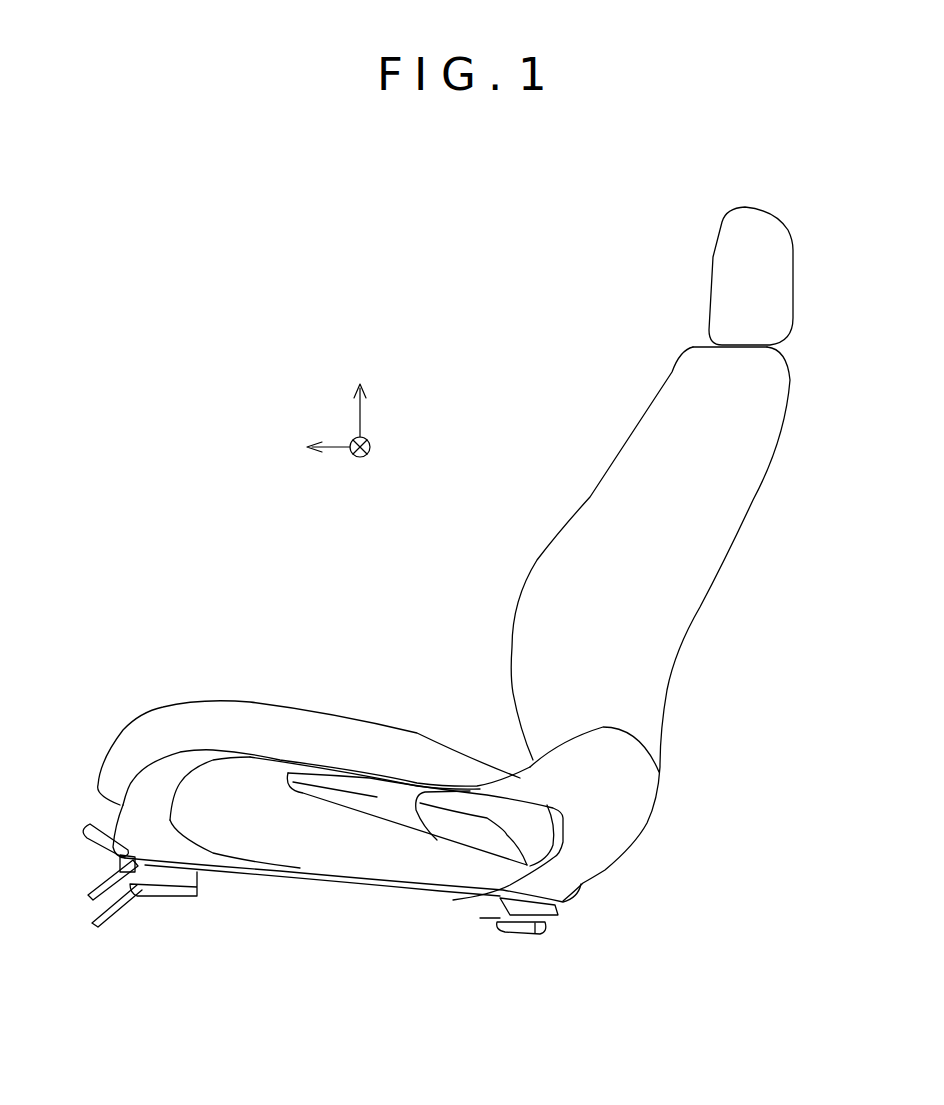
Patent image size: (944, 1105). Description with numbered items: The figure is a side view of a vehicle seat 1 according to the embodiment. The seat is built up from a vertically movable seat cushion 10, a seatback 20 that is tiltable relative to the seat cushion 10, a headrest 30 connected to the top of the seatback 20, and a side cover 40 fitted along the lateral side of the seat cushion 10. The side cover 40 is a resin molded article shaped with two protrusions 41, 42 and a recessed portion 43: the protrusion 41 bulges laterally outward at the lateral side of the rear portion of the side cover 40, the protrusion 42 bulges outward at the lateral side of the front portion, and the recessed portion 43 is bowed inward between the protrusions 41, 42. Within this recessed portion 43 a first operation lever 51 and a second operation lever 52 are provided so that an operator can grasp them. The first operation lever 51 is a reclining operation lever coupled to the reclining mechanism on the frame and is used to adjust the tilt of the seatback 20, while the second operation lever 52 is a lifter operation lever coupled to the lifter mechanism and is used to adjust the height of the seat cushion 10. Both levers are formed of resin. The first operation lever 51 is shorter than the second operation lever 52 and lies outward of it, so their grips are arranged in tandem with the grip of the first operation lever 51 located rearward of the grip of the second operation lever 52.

The vehicle seat 1 is at (469, 183).
The seat cushion 10 is at (302, 728).
The seatback 20 is at (610, 472).
The headrest 30 is at (710, 275).
The side cover 40 is at (370, 908).
The protrusion 41 is at (567, 863).
The protrusion 42 is at (153, 842).
The recessed portion 43 is at (370, 840).
The first operation lever 51 is at (460, 817).
The second operation lever 52 is at (337, 800).